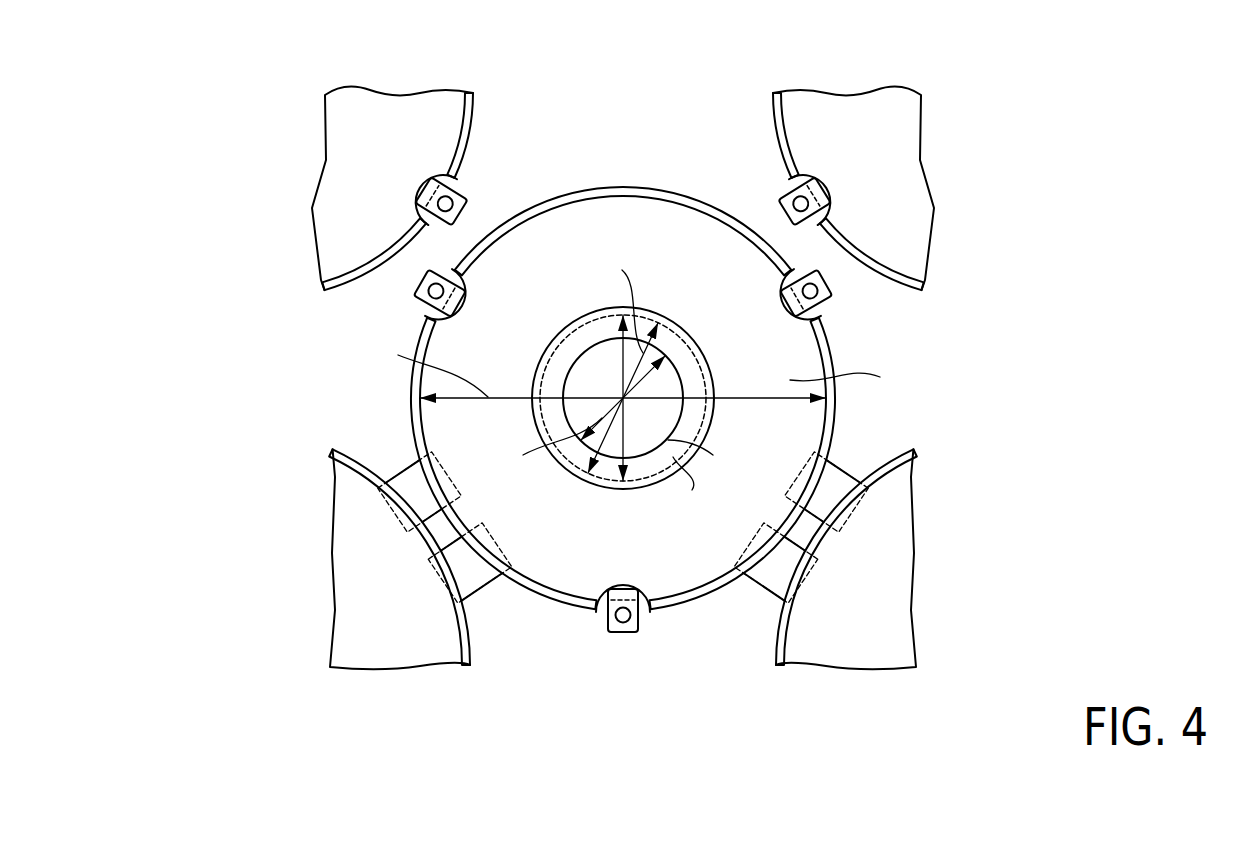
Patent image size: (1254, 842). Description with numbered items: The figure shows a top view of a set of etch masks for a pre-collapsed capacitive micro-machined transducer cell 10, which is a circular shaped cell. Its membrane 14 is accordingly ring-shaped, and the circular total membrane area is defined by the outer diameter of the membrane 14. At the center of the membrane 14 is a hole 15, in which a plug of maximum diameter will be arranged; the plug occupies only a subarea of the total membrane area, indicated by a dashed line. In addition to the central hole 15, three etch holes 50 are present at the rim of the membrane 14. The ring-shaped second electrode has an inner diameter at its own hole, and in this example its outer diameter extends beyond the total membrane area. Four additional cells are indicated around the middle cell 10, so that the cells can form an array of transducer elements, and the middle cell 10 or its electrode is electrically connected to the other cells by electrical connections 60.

The pre-collapsed capacitive micro-machined transducer cell 10 is at (655, 130).
The membrane 14 is at (803, 363).
The hole 15 is at (665, 408).
The etch holes 50 is at (430, 292).
The electrical connections 60 is at (404, 482).